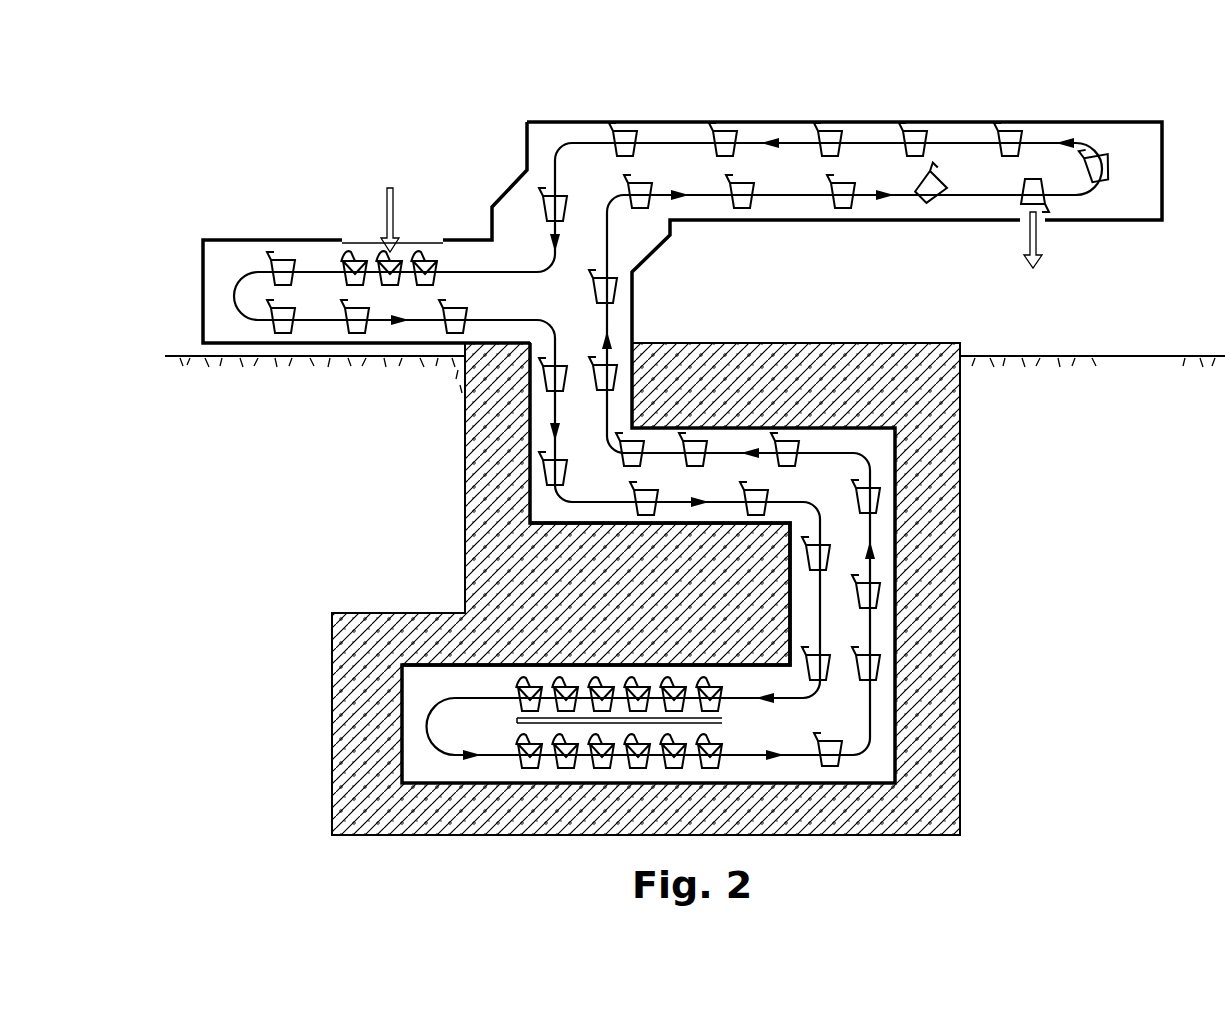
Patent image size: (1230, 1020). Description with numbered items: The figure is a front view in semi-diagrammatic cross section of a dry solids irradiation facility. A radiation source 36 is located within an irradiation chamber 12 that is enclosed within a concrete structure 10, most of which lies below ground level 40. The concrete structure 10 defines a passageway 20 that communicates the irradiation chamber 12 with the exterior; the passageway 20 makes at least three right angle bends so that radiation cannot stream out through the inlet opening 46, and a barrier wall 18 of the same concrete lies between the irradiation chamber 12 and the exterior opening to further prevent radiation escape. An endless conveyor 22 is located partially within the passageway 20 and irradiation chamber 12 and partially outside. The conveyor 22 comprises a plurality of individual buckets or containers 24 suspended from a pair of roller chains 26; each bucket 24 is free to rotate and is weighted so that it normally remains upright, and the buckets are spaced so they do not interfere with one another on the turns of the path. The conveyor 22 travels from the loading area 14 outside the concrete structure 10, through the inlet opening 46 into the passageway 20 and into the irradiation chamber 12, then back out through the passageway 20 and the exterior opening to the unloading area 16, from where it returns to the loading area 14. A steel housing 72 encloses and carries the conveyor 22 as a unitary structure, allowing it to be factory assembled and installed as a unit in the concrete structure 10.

The concrete structure 10 is at (945, 570).
The irradiation chamber 12 is at (746, 736).
The loading area 14 is at (362, 242).
The unloading area 16 is at (1040, 222).
The barrier wall 18 is at (616, 598).
The passageway 20 is at (791, 498).
The conveyor 22 is at (651, 143).
The bucket 24 is at (620, 142).
The roller chains 26 is at (555, 412).
The radiation source 36 is at (517, 722).
The ground level 40 is at (1068, 357).
The inlet opening 46 is at (593, 335).
The steel housing 72 is at (945, 122).